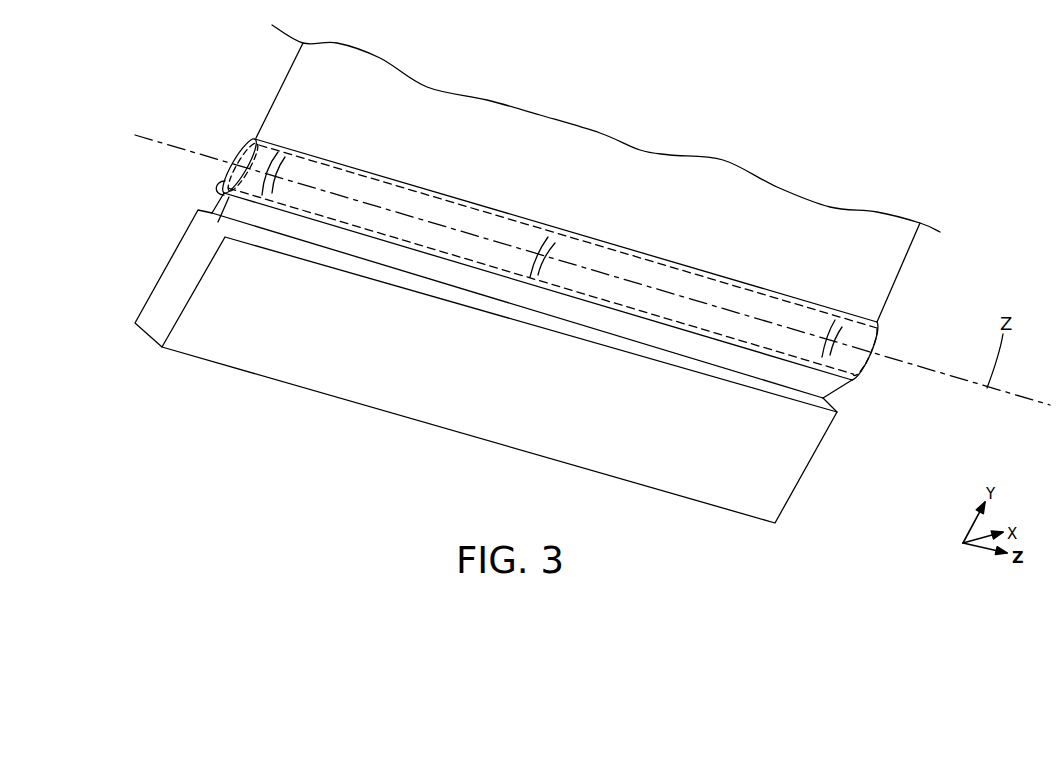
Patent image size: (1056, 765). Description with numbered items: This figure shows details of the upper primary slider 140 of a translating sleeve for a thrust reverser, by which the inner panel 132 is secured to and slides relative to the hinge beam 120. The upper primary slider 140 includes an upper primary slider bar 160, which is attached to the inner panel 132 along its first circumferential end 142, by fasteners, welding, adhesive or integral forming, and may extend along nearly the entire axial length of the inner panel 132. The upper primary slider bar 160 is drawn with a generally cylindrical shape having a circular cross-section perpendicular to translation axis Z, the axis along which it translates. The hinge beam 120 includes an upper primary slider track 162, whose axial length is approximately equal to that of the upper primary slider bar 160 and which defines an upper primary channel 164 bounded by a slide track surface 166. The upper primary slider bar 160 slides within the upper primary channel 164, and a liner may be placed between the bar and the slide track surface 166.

The hinge beam 120 is at (579, 178).
The inner panel 132 is at (471, 383).
The upper primary slider 140 is at (259, 136).
The first circumferential end 142 is at (630, 345).
The upper primary slider bar 160 is at (410, 202).
The upper primary slider track 162 is at (880, 328).
The upper primary channel 164 is at (242, 141).
The slide track surface 166 is at (219, 187).